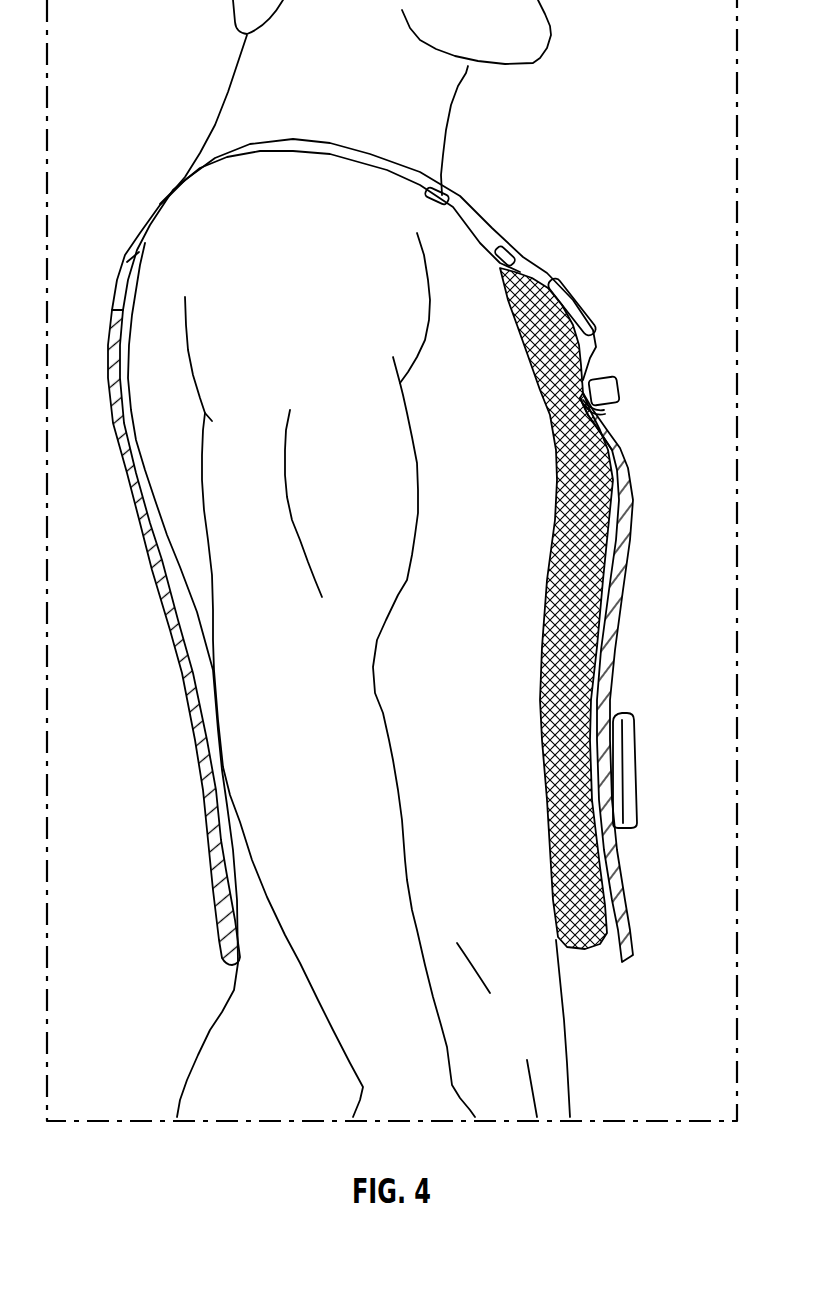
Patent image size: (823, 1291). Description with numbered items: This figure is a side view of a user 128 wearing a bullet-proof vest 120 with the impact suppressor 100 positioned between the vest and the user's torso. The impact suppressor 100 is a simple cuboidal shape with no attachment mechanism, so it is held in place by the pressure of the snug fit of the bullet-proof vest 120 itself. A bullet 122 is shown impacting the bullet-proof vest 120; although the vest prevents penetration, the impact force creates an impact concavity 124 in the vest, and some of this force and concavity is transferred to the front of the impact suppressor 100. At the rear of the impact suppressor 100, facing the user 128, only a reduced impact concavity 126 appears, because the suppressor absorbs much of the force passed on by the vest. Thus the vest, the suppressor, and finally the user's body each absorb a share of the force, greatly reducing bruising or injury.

The impact suppressor 100 is at (533, 283).
The bullet-proof vest 120 is at (633, 493).
The bullet 122 is at (603, 376).
The impact concavity 124 is at (600, 407).
The reduced impact concavity 126 is at (620, 443).
The user 128 is at (187, 148).